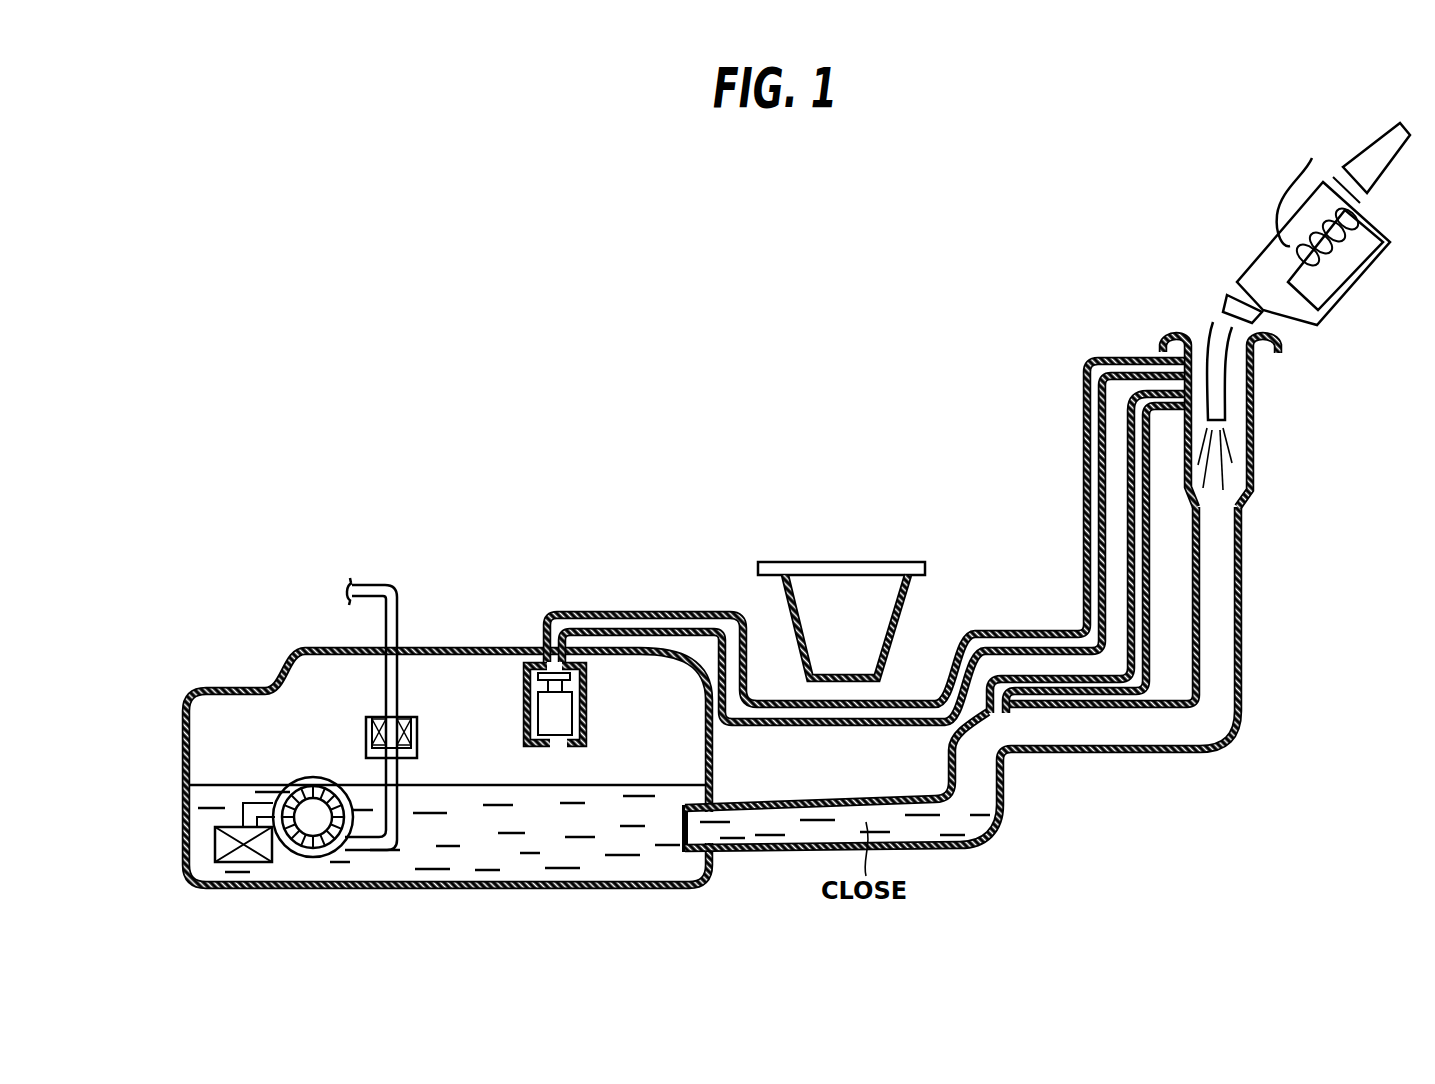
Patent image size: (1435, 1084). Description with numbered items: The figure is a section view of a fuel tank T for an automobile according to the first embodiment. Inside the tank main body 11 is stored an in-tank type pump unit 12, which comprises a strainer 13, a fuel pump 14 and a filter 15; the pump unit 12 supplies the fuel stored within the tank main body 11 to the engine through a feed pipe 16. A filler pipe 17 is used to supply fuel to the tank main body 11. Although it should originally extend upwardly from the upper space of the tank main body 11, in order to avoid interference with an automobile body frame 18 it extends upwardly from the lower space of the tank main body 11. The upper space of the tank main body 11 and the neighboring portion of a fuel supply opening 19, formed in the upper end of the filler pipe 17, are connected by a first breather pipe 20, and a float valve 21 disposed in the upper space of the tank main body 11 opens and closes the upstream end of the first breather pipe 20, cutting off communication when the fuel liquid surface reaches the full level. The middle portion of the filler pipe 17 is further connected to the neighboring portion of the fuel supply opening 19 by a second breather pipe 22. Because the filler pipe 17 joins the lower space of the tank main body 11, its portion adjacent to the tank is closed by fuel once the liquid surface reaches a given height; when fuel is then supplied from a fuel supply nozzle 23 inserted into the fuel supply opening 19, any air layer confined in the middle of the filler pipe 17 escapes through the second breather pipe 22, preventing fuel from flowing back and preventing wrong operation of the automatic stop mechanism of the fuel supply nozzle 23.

The tank main body 11 is at (297, 664).
The pump unit 12 is at (299, 780).
The strainer 13 is at (215, 843).
The fuel pump 14 is at (310, 803).
The filter 15 is at (400, 717).
The feed pipe 16 is at (367, 585).
The filler pipe 17 is at (1120, 755).
The automobile body frame 18 is at (896, 615).
The fuel supply opening 19 is at (1272, 346).
The first breather pipe 20 is at (640, 611).
The float valve 21 is at (509, 670).
The second breather pipe 22 is at (1155, 510).
The fuel supply nozzle 23 is at (1262, 262).
The fuel tank T is at (432, 579).